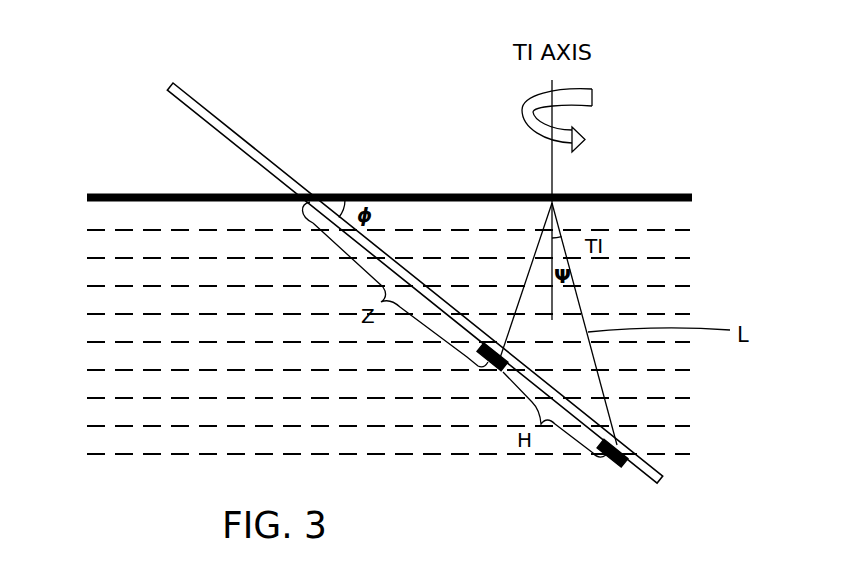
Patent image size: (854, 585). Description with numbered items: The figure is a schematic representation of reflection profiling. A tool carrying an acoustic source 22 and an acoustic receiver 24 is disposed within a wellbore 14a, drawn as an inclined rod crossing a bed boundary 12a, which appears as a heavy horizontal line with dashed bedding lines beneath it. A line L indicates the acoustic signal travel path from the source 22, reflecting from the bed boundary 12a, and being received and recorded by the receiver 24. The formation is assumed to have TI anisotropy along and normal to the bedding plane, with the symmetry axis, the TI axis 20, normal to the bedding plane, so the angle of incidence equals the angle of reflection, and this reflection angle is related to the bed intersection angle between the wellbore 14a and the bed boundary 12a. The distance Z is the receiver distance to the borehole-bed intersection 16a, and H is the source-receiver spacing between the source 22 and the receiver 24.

The bed boundary 12a is at (437, 193).
The wellbore 14a is at (215, 117).
The borehole-bed intersection 16a is at (333, 194).
The tilt (TI) axis 20 is at (552, 173).
The acoustic source 22 is at (628, 463).
The acoustic receiver 24 is at (495, 373).